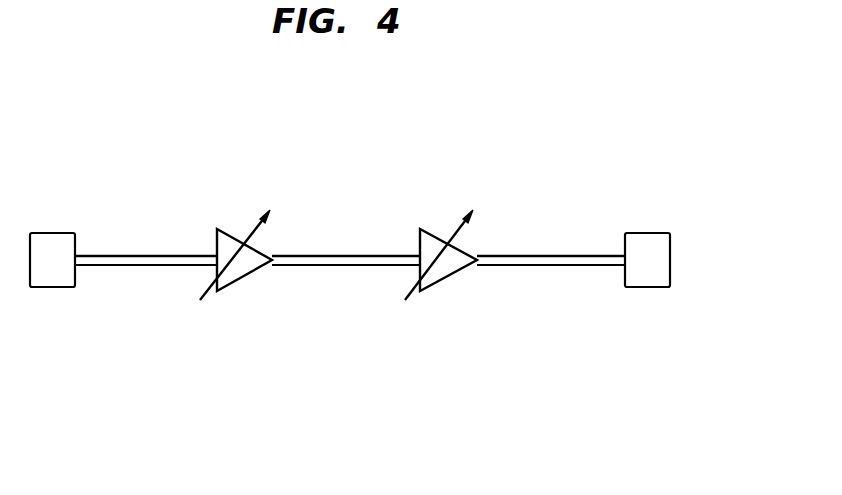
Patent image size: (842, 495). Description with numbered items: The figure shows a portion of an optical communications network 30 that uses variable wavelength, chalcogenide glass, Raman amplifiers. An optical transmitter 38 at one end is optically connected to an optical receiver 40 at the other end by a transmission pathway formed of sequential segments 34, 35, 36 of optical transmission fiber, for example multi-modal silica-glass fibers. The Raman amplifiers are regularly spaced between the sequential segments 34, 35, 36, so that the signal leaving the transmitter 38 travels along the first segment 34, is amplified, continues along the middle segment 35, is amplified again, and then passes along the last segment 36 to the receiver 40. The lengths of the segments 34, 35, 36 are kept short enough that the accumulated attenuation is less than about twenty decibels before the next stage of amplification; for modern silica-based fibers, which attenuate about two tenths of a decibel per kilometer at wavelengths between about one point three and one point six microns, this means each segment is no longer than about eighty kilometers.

The optical communications network 30 is at (477, 165).
The segment of optical transmission fiber 34 is at (163, 268).
The segment of optical transmission fiber 35 is at (368, 268).
The segment of optical transmission fiber 36 is at (573, 267).
The optical transmitter 38 is at (40, 276).
The optical receiver 40 is at (635, 276).